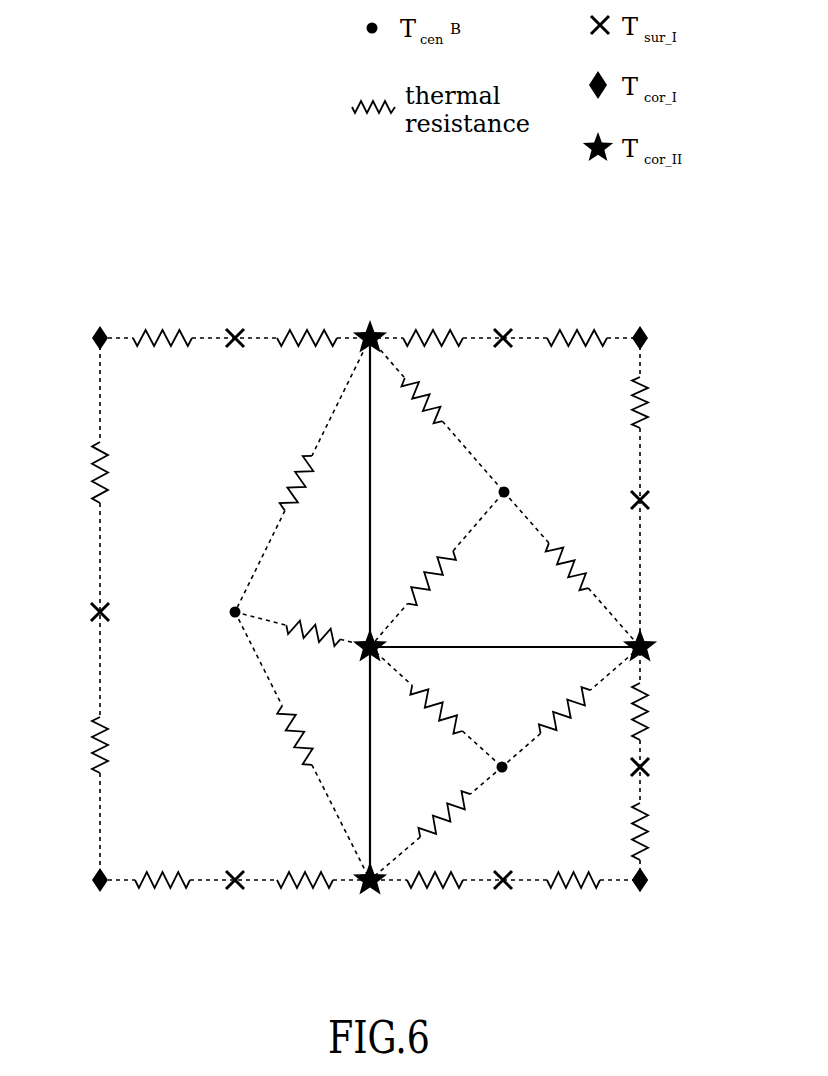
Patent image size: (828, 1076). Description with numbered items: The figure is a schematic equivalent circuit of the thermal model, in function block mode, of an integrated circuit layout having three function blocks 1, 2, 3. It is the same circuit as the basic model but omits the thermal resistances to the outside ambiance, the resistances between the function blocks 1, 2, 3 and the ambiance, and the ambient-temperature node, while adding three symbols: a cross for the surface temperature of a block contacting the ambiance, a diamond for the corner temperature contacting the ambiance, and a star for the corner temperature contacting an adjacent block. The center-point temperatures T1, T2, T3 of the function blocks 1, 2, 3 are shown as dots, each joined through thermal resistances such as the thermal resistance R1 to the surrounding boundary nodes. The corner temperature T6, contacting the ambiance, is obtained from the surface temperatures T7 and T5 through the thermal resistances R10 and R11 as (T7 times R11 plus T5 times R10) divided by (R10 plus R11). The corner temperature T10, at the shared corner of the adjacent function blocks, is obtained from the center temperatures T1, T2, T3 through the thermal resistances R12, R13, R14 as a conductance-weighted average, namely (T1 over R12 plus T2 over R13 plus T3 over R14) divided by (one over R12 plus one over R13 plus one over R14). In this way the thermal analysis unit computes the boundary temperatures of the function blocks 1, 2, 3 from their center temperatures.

The temperature of the center point of function block 1 T1 is at (232, 615).
The temperature of the center point of function block 2 T2 is at (509, 488).
The temperature of the center point of function block 3 T3 is at (507, 772).
The surface temperature T5 is at (96, 605).
The corner temperature contacting the ambiance (T_cor_I) T6 is at (96, 333).
The surface temperature T7 is at (238, 333).
The corner temperature contacting the adjacent function block (T_cor_II) T10 is at (363, 655).
The thermal resistance R1 is at (285, 483).
The thermal resistance R10 is at (162, 358).
The thermal resistance R11 is at (129, 472).
The thermal resistance R12 is at (314, 613).
The thermal resistance R13 is at (427, 564).
The thermal resistance R14 is at (452, 706).
The function block 1 is at (358, 866).
The function block 2 is at (625, 637).
The function block 3 is at (629, 866).